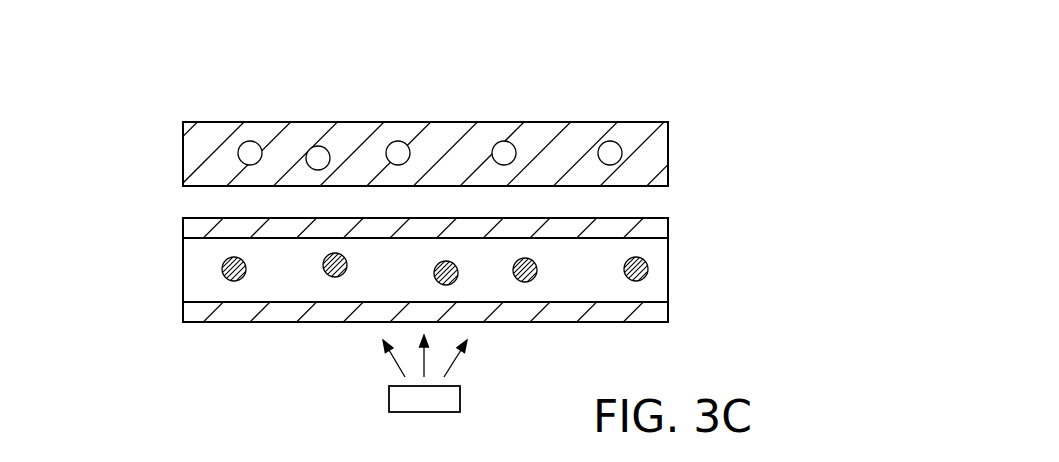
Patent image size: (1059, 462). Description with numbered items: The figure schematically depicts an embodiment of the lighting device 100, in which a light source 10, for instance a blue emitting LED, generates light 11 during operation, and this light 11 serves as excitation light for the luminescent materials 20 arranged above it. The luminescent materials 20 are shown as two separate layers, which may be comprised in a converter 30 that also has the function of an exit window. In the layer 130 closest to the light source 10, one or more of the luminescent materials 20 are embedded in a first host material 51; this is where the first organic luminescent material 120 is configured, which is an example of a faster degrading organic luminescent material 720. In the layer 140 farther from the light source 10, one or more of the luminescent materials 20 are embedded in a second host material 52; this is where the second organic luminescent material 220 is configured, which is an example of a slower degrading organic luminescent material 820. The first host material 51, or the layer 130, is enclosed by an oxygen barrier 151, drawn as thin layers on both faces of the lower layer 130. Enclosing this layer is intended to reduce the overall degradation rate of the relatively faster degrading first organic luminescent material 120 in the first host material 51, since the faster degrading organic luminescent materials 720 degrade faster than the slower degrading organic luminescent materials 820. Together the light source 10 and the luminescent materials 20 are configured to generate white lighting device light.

The lighting device 100 is at (175, 75).
The converter 30 is at (130, 133).
The second host material 52 is at (293, 146).
The second organic luminescent material 220 is at (438, 113).
The slower degrading organic luminescent material 820 is at (616, 148).
The layer 140 is at (446, 126).
The luminescent materials 20 is at (728, 213).
The oxygen barrier 151 is at (190, 228).
The layer 130 is at (427, 284).
The first host material 51 is at (283, 277).
The first organic luminescent material 120 is at (465, 308).
The faster degrading organic luminescent material 720 is at (637, 279).
The light source 10 is at (367, 401).
The light 11 is at (450, 367).